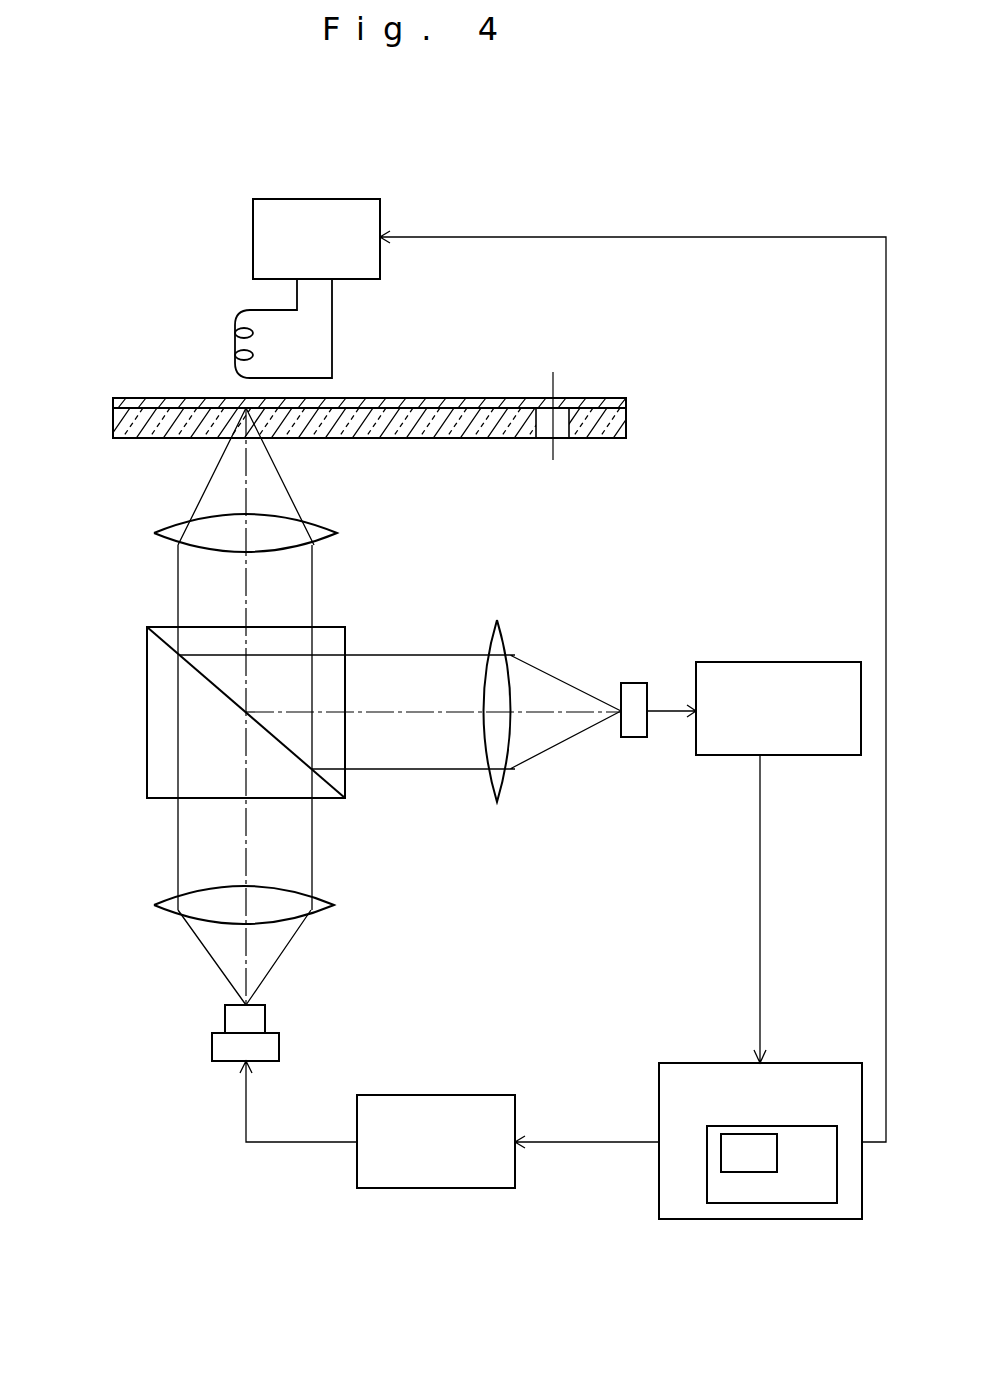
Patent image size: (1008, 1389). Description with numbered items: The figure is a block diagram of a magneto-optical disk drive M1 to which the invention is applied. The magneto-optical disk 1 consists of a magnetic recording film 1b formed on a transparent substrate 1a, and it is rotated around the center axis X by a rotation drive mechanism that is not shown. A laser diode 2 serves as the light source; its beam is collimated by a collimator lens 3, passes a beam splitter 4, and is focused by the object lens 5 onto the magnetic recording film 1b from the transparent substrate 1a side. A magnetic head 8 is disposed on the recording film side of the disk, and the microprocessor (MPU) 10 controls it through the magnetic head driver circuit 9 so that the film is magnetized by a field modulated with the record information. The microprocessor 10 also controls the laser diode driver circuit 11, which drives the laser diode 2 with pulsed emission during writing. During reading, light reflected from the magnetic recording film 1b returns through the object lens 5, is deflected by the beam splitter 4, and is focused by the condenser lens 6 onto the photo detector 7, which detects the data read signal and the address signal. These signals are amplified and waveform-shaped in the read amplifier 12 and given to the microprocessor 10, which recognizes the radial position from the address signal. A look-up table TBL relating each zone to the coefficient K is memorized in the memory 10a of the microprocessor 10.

The magneto-optical disk 1 is at (337, 417).
The transparent substrate 1a is at (118, 440).
The magnetic recording film 1b is at (118, 398).
The laser diode 2 is at (212, 1050).
The collimator lens 3 is at (160, 911).
The beam splitter 4 is at (147, 730).
The object lens 5 is at (160, 540).
The condenser lens 6 is at (508, 640).
The photo detector 7 is at (634, 683).
The magnetic head 8 is at (236, 337).
The magnetic head driver circuit 9 is at (348, 199).
The microprocessor (MPU) 10 is at (754, 1178).
The memory 10a is at (770, 1210).
The laser diode driver circuit 11 is at (478, 1188).
The read amplifier 12 is at (793, 662).
The center axis X is at (553, 385).
The look-up table TBL is at (768, 1172).
The magneto-optical disk drive M1 is at (126, 212).